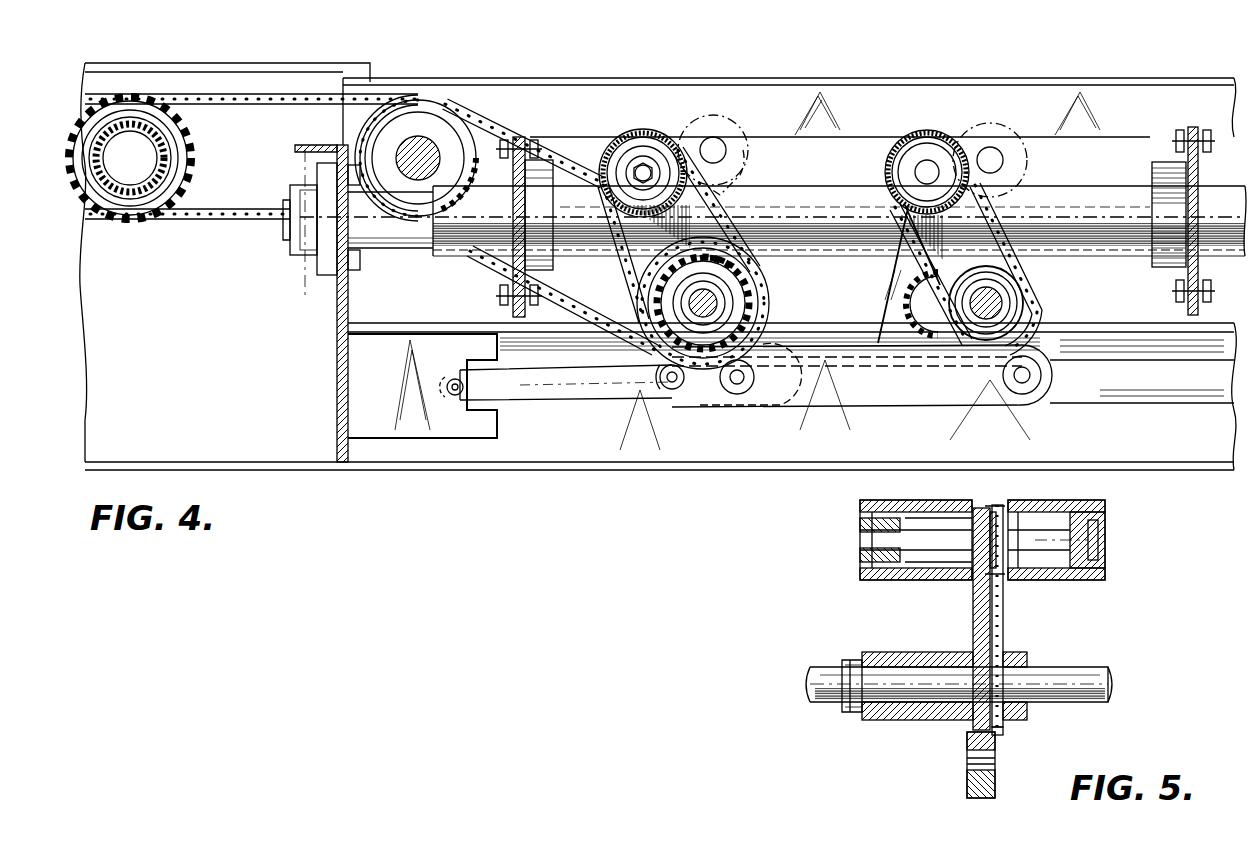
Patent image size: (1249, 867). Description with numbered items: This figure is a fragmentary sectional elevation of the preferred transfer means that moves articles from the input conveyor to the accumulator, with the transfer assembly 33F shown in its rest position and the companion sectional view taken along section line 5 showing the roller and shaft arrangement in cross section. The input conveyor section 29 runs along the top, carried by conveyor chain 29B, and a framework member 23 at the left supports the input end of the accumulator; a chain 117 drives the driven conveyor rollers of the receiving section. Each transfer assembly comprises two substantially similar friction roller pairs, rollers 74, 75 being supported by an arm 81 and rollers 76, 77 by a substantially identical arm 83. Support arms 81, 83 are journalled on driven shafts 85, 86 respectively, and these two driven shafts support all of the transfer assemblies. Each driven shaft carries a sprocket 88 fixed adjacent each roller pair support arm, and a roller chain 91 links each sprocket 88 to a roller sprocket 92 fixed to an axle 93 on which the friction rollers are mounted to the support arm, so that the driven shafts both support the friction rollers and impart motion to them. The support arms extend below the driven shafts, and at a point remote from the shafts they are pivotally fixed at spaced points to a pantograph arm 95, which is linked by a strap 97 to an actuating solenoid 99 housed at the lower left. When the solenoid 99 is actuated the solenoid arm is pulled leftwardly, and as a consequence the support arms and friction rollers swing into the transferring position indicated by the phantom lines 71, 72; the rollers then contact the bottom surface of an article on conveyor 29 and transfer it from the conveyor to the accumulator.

In FIG. 4, the chain 117 is at (258, 95).
In FIG. 4, the conveyor chain 29B is at (526, 128).
In FIG. 4, the friction roller 77 is at (640, 130).
In FIG. 4, the friction roller 76 is at (650, 140).
In FIG. 4, the phantom line 72 is at (706, 112).
In FIG. 4, the transfer assembly 33F is at (828, 108).
In FIG. 4, the section line 5- 5 is at (905, 104).
In FIG. 4, the phantom line 71 is at (1000, 120).
In FIG. 4, the input conveyor section 29 is at (1193, 125).
In FIG. 4, the friction roller 75 is at (900, 160).
In FIG. 5, the friction roller 75 is at (870, 503).
In FIG. 4, the roller sprocket 92 is at (690, 195).
In FIG. 5, the roller sprocket 92 is at (994, 510).
In FIG. 4, the support arm 83 is at (690, 225).
In FIG. 4, the support arm 81 is at (900, 220).
In FIG. 5, the support arm 81 is at (973, 616).
In FIG. 4, the roller chain 91 is at (640, 270).
In FIG. 5, the roller chain 91 is at (1003, 618).
In FIG. 4, the sprocket 88 is at (750, 262).
In FIG. 5, the sprocket 88 is at (1000, 735).
In FIG. 4, the driven shaft 86 is at (720, 302).
In FIG. 4, the driven shaft 85 is at (1000, 300).
In FIG. 5, the driven shaft 85 is at (1060, 668).
In FIG. 4, the framework member 23 is at (337, 330).
In FIG. 4, the strap 97 is at (545, 395).
In FIG. 4, the pantograph arm 95 is at (848, 400).
In FIG. 5, the pantograph arm 95 is at (967, 790).
In FIG. 4, the actuating solenoid 99 is at (408, 430).
In FIG. 5, the friction roller 74 is at (1068, 510).
In FIG. 5, the axle 93 is at (1080, 535).